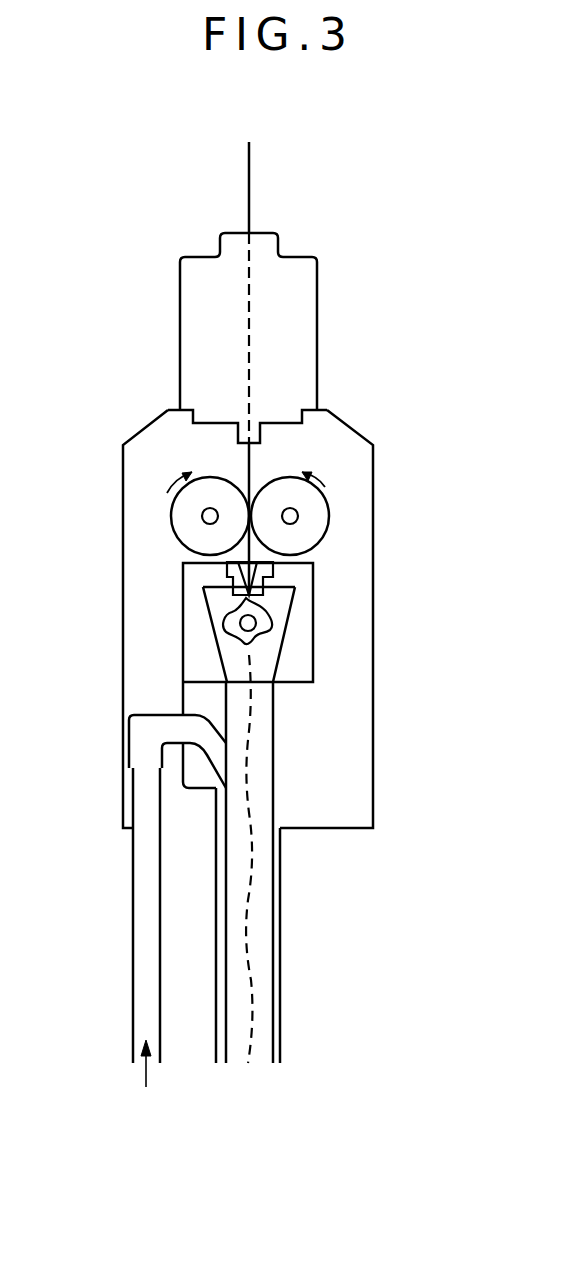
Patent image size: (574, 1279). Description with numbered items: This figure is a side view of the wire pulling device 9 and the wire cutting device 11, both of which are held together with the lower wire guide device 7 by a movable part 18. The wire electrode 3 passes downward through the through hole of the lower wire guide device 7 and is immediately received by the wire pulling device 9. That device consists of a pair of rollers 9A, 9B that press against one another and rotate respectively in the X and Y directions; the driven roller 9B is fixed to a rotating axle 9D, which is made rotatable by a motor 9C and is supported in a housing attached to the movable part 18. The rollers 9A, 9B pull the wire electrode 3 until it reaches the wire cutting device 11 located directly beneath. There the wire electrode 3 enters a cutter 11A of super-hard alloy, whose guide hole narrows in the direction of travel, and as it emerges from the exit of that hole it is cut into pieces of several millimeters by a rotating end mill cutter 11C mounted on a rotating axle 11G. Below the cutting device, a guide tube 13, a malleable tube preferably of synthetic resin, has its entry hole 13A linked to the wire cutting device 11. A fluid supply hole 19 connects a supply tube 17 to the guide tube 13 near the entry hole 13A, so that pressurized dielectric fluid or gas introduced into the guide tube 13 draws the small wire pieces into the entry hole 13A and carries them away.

The wire electrode 3 is at (252, 165).
The lower wire guide device 7 is at (300, 268).
The wire pulling device 9 is at (318, 440).
The roller 9A is at (186, 508).
The driven roller 9B is at (307, 494).
The motor 9C is at (205, 517).
The rotating axle 9D is at (297, 517).
The wire cutting device 11 is at (175, 627).
The cutter 11A is at (225, 570).
The end mill cutter 11C is at (270, 630).
The rotating axle 11G is at (255, 628).
The guide tube 13 is at (258, 957).
The entry hole 13A is at (273, 685).
The supply tube 17 is at (145, 916).
The movable part 18 is at (358, 800).
The fluid supply hole 19 is at (140, 742).